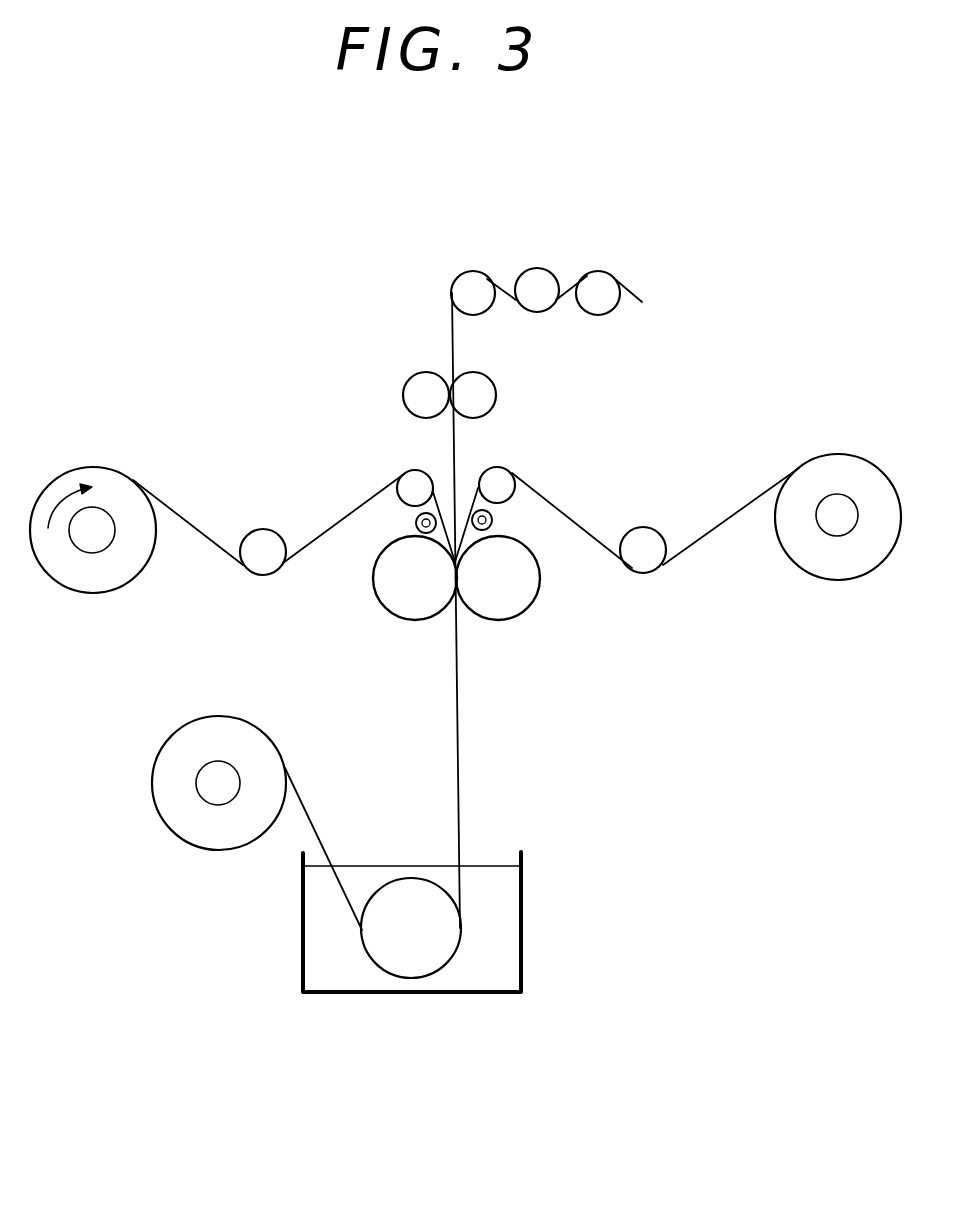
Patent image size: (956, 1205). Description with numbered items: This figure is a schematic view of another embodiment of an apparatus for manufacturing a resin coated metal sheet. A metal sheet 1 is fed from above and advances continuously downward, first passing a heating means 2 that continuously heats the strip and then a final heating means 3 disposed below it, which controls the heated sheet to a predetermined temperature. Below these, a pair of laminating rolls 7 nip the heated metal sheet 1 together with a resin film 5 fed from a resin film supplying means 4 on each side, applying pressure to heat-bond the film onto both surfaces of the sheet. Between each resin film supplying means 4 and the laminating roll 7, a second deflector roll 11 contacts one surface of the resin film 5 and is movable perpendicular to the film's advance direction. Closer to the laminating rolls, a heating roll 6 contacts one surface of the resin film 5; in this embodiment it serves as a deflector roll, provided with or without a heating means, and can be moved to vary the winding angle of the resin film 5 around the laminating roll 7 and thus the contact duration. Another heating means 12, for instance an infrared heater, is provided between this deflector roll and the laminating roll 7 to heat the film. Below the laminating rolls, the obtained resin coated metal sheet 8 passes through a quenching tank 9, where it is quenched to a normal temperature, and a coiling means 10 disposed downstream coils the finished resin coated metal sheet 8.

The metal sheet 1 is at (453, 448).
The heating means 2 is at (588, 277).
The final heating means 3 is at (408, 390).
The resin film supplying means 4 is at (133, 480).
The resin film 5 is at (320, 533).
The heating roll 6 is at (403, 473).
The laminating rolls 7 is at (402, 607).
The resin coated metal sheet 8 is at (458, 805).
The quenching tank 9 is at (523, 905).
The coiling means 10 is at (180, 805).
The second deflector roll 11 is at (247, 563).
The heating means 12 is at (415, 525).